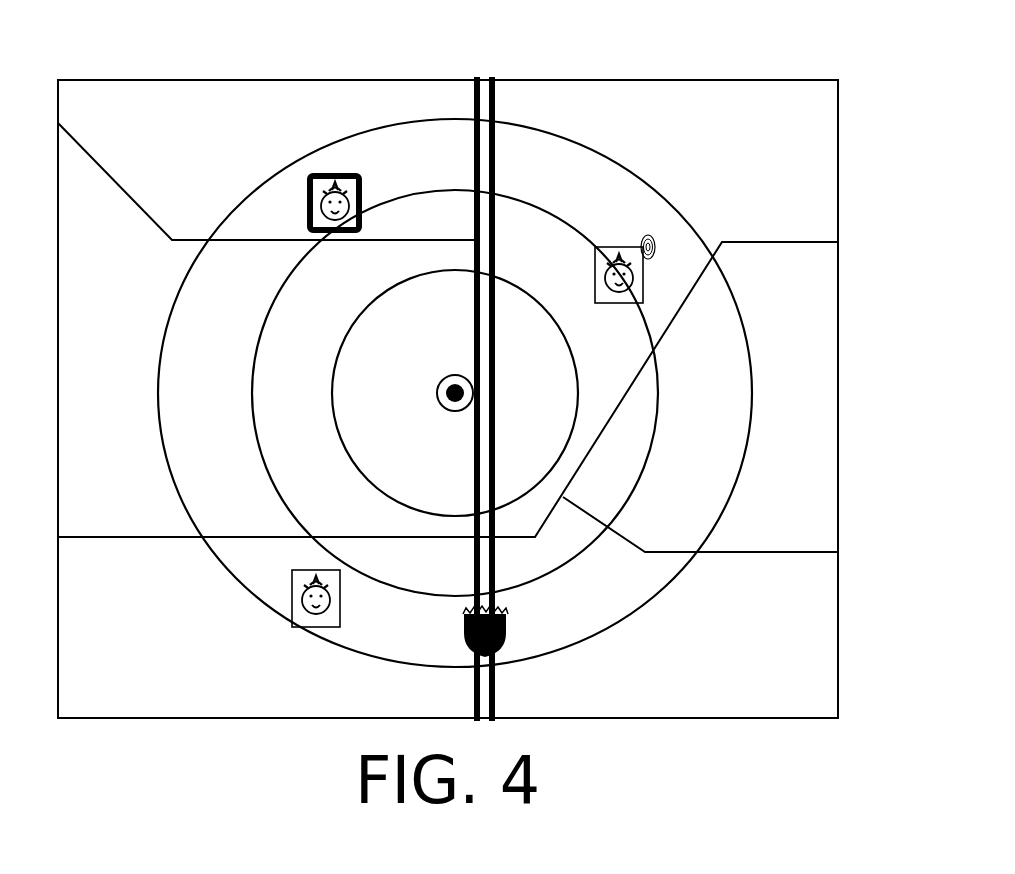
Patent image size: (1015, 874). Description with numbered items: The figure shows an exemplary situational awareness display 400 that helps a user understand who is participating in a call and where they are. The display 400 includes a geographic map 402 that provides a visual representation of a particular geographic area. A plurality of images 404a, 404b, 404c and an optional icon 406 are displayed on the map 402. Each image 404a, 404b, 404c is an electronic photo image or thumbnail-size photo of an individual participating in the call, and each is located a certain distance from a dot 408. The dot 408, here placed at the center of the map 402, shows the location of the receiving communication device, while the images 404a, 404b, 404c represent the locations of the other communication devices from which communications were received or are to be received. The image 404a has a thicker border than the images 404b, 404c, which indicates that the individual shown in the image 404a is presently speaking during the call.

The situational awareness display 400 is at (690, 35).
The geographic map 402 is at (875, 195).
The image 404a is at (298, 183).
The image 404b is at (635, 203).
The image 404c is at (282, 628).
The icon 406 is at (660, 222).
The dot 408 is at (432, 414).